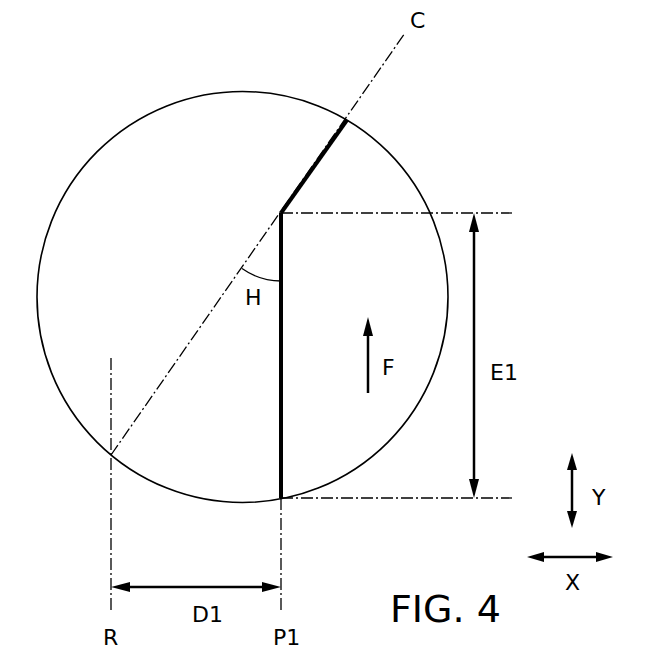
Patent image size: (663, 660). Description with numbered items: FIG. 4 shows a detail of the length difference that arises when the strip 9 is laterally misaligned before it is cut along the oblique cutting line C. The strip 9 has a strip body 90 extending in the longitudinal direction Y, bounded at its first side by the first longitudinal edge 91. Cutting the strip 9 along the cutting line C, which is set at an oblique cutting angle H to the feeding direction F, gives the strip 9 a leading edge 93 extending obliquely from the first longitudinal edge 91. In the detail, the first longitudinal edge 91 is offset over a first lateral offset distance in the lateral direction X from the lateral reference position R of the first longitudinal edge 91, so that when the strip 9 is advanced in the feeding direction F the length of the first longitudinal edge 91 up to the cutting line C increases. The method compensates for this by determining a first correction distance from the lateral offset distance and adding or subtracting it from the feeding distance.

The strip 9 is at (242, 297).
The strip body 90 is at (357, 288).
The first longitudinal edge 91 is at (281, 450).
The leading edge 93 is at (308, 168).